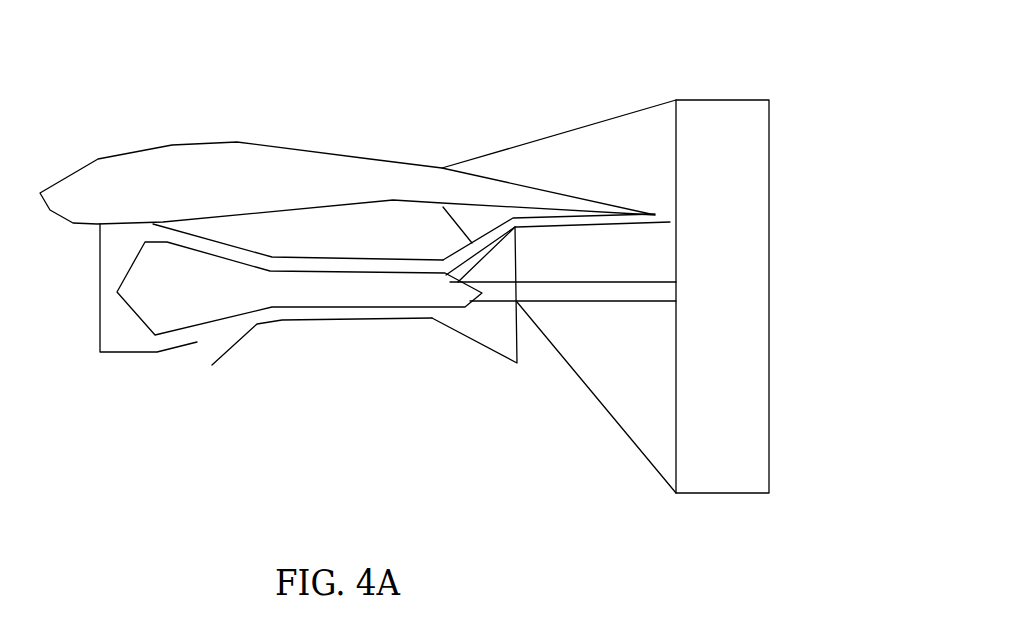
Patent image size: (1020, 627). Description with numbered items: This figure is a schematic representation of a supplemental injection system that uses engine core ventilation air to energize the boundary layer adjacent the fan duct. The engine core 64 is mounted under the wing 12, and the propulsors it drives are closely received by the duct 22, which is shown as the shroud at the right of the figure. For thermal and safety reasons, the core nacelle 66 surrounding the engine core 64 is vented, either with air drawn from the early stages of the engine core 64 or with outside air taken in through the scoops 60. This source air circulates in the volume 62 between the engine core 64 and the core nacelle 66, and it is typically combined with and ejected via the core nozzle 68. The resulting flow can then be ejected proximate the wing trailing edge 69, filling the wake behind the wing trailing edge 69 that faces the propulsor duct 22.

The wing 12 is at (172, 145).
The duct 22 is at (762, 252).
The scoops 60 is at (242, 347).
The volume 62 is at (287, 313).
The engine core 64 is at (315, 295).
The core nacelle 66 is at (390, 318).
The core nozzle 68 is at (453, 282).
The wing trailing edge 69 is at (655, 213).